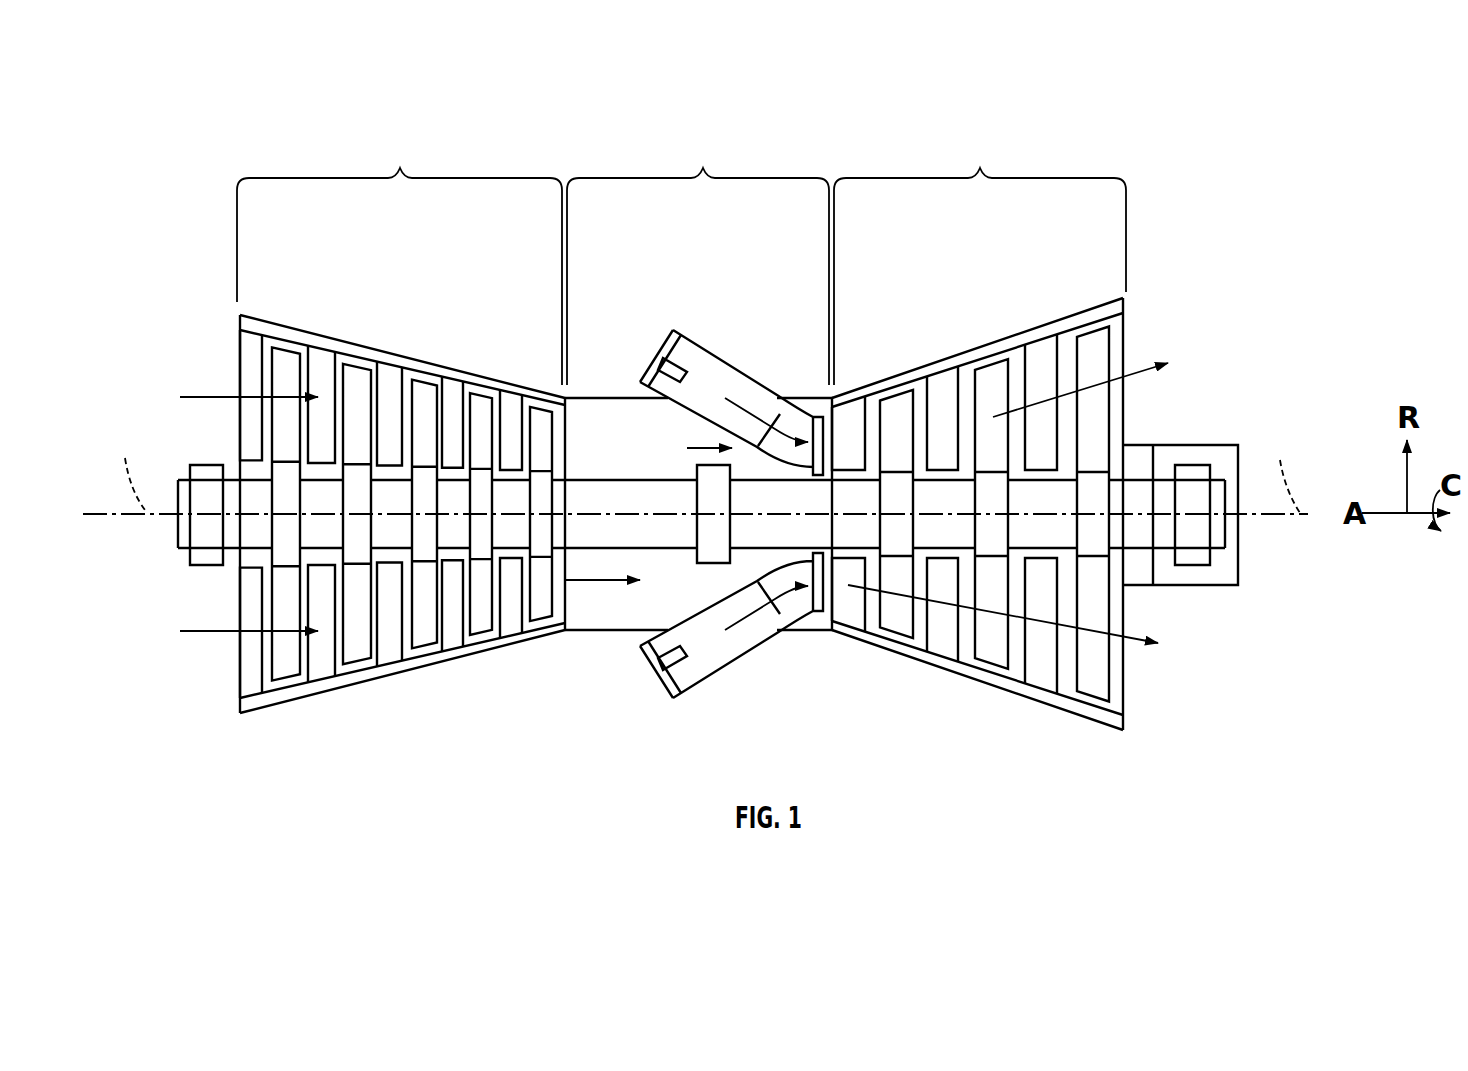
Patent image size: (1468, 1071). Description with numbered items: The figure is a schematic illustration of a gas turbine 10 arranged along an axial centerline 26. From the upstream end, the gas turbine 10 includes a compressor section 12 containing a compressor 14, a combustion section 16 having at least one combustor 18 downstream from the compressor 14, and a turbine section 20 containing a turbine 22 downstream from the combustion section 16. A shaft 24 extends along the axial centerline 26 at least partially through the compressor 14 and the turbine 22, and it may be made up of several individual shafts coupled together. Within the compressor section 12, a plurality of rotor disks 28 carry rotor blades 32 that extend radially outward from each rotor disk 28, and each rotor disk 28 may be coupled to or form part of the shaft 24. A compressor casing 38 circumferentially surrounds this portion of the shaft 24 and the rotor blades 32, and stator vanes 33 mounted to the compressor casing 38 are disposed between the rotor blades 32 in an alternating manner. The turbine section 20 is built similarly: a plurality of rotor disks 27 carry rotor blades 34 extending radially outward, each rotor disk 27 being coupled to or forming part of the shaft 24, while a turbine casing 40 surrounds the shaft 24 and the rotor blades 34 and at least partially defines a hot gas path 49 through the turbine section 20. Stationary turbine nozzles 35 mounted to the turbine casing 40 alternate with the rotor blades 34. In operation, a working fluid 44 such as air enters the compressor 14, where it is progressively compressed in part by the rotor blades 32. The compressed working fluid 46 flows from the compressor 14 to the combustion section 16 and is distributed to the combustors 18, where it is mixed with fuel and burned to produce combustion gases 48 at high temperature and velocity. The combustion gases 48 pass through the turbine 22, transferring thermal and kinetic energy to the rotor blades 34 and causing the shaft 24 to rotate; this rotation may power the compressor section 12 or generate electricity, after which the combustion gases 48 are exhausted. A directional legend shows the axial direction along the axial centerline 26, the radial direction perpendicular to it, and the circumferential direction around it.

The gas turbine 10 is at (1235, 198).
The compressor section 12 is at (399, 422).
The compressor 14 is at (345, 313).
The combustion section 16 is at (698, 258).
The combustor 18 is at (707, 353).
The turbine section 20 is at (979, 430).
The turbine 22 is at (998, 288).
The shaft 24 is at (628, 493).
The axial centerline 26 is at (145, 510).
The rotor disks 27 is at (990, 500).
The rotor disks 28 is at (425, 497).
The rotor blades 32 is at (273, 677).
The stator vanes 33 is at (322, 668).
The rotor blades 34 is at (887, 622).
The stationary turbine nozzles 35 is at (943, 642).
The compressor casing 38 is at (403, 356).
The turbine casing 40 is at (912, 378).
The working fluid 44 is at (222, 397).
The compressed working fluid 46 is at (707, 448).
The combustion gases 48 is at (752, 410).
The hot gas path 49 is at (1135, 647).